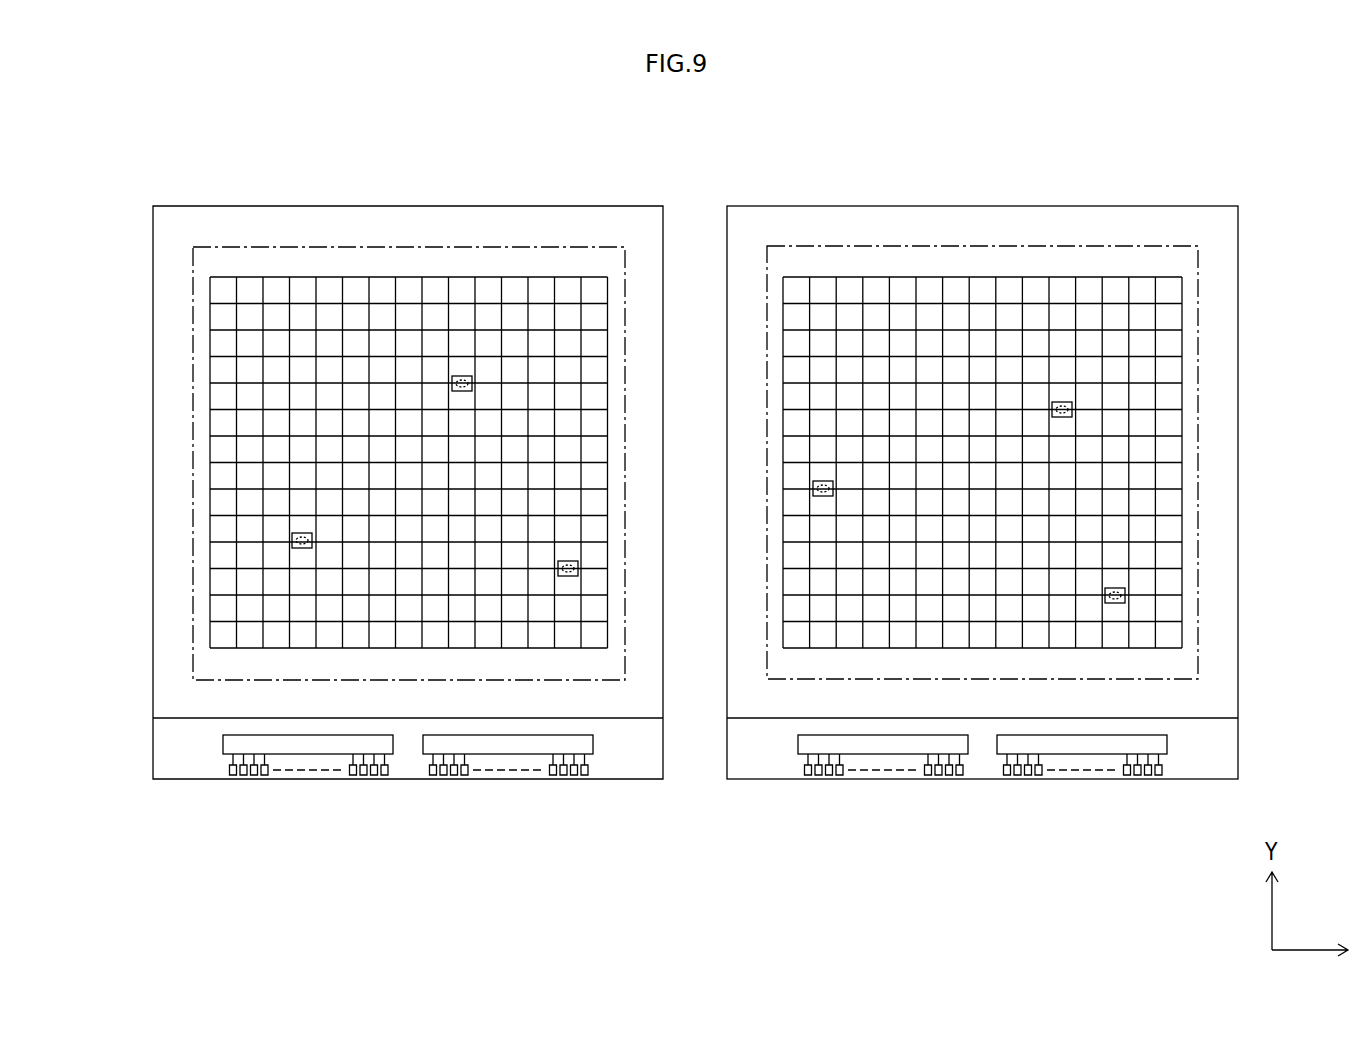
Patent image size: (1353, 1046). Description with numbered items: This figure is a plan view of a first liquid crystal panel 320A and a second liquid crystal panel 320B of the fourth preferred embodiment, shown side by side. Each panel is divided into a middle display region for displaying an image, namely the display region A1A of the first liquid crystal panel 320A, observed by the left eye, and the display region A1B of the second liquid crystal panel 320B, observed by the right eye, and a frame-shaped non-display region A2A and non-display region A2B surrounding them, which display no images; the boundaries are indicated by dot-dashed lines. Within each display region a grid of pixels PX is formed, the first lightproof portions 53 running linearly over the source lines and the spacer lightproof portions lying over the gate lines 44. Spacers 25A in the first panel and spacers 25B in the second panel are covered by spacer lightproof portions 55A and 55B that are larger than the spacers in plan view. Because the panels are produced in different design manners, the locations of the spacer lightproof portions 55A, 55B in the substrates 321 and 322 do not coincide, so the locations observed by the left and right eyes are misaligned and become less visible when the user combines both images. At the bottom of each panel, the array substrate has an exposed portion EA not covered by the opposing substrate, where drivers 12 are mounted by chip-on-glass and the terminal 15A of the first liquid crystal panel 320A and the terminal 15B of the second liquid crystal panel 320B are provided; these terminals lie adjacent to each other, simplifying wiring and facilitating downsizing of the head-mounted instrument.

The first liquid crystal panel 320A is at (367, 149).
The second liquid crystal panel 320B is at (1006, 154).
The display region of the first liquid crystal panel A1A is at (306, 254).
The non-display region of the first liquid crystal panel A2A is at (243, 217).
The display region of the second liquid crystal panel A1B is at (1132, 257).
The non-display region of the second liquid crystal panel A2B is at (1196, 218).
The pixel PX is at (361, 403).
The first lightproof portion 53 is at (530, 293).
The gate line 44 is at (595, 297).
The spacer of the first liquid crystal panel 25A is at (435, 367).
The spacer lightproof portion of the first liquid crystal panel 55A is at (462, 376).
The spacer of the second liquid crystal panel 25B is at (1060, 497).
The spacer lightproof portion of the second liquid crystal panel 55B is at (1060, 402).
The driver 12 is at (383, 748).
The terminal of the first liquid crystal panel 15A is at (408, 792).
The terminal of the second liquid crystal panel 15B is at (958, 775).
The substrate 321 is at (512, 703).
The substrate 322 is at (611, 770).
The exposed portion EA is at (409, 788).